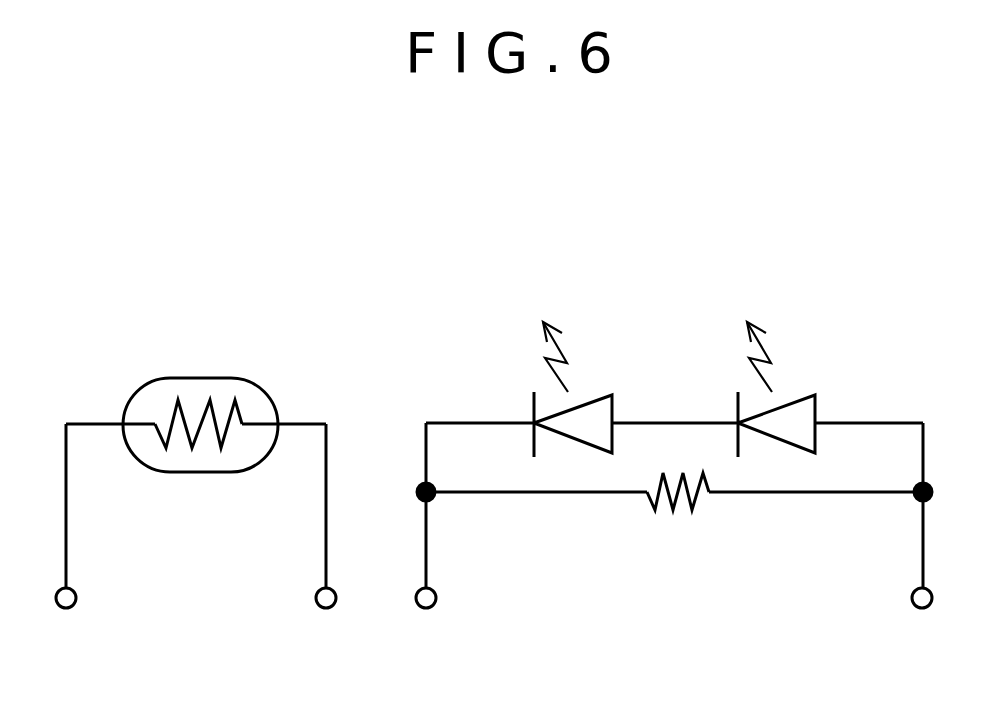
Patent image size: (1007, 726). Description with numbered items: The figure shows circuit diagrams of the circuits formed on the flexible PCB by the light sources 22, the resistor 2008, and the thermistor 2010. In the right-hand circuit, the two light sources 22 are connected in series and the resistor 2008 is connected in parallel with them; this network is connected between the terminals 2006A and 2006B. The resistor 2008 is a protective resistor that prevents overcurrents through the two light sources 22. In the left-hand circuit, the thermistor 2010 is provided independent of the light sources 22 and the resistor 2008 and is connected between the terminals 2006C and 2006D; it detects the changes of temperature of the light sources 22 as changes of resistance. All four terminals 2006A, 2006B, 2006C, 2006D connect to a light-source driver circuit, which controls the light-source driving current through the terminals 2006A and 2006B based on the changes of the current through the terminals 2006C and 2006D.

The light sources 22 is at (591, 397).
The resistor 2008 is at (690, 513).
The thermistor 2010 is at (207, 378).
The terminal 2006A is at (924, 608).
The terminal 2006B is at (428, 608).
The terminal 2006C is at (327, 608).
The terminal 2006D is at (67, 608).